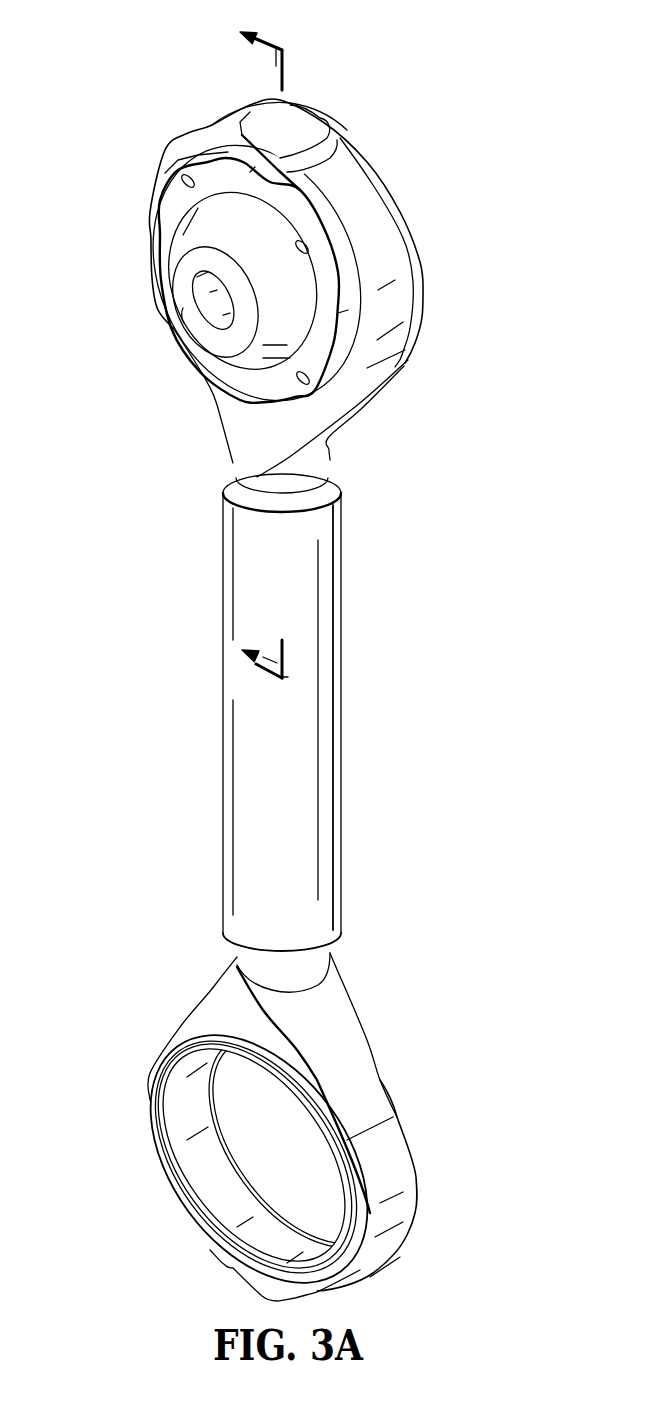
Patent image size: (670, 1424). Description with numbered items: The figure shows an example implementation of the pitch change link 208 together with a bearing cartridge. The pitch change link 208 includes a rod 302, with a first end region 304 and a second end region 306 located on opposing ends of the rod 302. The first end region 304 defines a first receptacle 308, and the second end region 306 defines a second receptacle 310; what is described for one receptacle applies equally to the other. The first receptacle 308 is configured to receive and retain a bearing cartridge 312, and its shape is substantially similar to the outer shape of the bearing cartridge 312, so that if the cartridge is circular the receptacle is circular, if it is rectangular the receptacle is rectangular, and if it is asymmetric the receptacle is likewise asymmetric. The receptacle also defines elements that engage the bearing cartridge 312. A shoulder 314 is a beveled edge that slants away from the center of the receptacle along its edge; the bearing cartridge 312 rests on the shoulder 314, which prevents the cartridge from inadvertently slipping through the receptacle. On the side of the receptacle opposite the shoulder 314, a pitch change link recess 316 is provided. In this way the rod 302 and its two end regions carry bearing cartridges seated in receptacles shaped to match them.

The pitch change link 208 is at (86, 62).
The rod 302 is at (343, 753).
The first end region 304 is at (452, 286).
The second end region 306 is at (440, 1210).
The first receptacle 308 is at (215, 156).
The second receptacle 310 is at (228, 1198).
The bearing cartridge 312 is at (147, 204).
The shoulder 314 is at (238, 1164).
The pitch change link recess 316 is at (174, 1158).